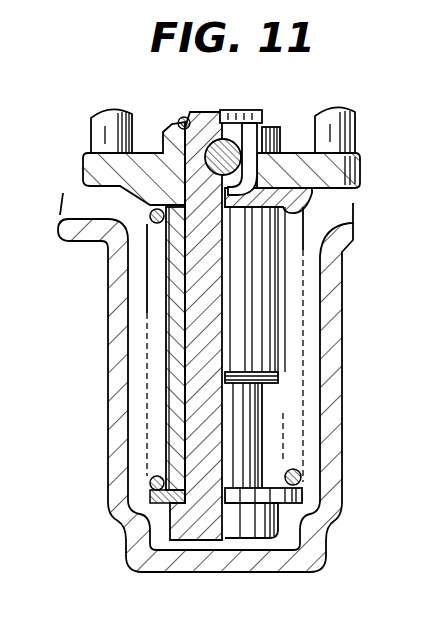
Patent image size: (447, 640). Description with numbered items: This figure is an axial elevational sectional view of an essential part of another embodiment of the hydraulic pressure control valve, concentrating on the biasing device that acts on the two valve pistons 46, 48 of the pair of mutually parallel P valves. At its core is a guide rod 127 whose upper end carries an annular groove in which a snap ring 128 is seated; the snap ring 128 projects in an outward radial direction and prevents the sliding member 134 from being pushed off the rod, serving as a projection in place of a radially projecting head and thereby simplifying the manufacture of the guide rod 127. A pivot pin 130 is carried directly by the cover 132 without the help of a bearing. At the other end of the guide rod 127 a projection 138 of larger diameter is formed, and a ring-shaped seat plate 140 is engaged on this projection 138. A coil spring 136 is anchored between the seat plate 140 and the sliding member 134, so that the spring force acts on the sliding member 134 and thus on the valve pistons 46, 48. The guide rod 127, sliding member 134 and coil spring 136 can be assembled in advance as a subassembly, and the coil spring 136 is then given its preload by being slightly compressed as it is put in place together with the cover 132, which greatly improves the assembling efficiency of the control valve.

The valve piston 46 is at (118, 106).
The valve piston 48 is at (346, 132).
The guide rod 127 is at (197, 408).
The snap ring 128 is at (263, 124).
The pivot pin 130 is at (233, 139).
The cover 132 is at (112, 348).
The sliding member 134 is at (160, 260).
The coil spring 136 is at (157, 485).
The projection 138 is at (277, 523).
The seat plate 140 is at (303, 494).